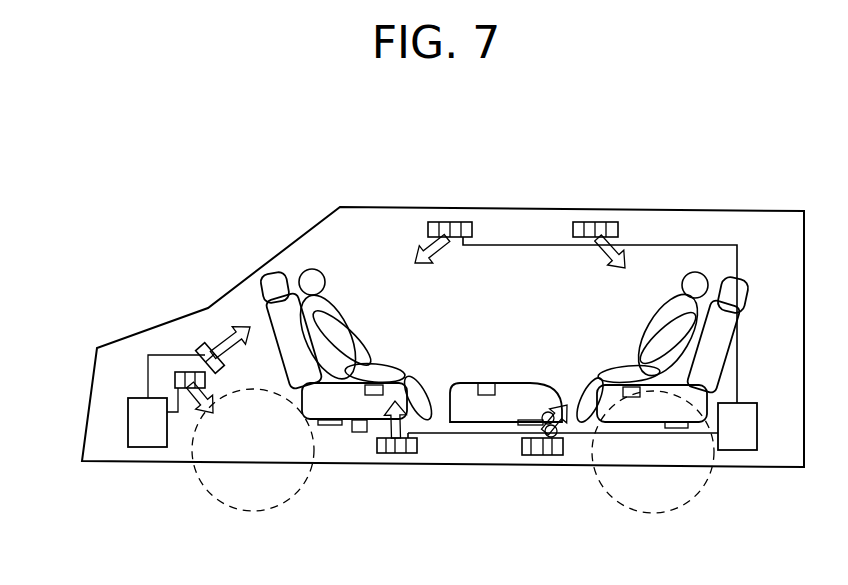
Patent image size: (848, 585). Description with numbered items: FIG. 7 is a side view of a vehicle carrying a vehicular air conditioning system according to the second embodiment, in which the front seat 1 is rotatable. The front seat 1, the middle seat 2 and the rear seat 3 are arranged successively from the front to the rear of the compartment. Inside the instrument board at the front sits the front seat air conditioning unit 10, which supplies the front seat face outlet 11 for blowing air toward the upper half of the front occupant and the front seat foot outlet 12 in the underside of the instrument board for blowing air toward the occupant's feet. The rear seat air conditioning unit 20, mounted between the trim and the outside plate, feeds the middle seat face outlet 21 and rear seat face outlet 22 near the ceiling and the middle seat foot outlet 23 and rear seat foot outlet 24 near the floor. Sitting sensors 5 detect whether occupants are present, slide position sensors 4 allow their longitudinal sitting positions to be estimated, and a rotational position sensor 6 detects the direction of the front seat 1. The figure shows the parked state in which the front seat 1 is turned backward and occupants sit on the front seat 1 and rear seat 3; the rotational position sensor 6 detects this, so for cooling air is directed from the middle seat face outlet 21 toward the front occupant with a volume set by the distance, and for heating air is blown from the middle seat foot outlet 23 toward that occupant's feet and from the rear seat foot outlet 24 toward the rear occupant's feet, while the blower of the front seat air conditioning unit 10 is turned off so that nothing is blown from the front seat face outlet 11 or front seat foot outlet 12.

The front seat 1 is at (317, 410).
The middle seat 2 is at (468, 408).
The rear seat 3 is at (656, 410).
The slide position sensor 4 is at (332, 425).
The sitting sensor 5 is at (378, 400).
The rotational position sensor 6 is at (358, 432).
The front seat air conditioning unit 10 is at (143, 411).
The front seat face outlet 11 is at (203, 365).
The front seat foot outlet 12 is at (178, 380).
The rear seat air conditioning unit 20 is at (742, 438).
The middle seat face outlet 21 is at (449, 225).
The rear seat face outlet 22 is at (596, 225).
The middle seat foot outlet 23 is at (398, 453).
The rear seat foot outlet 24 is at (533, 455).